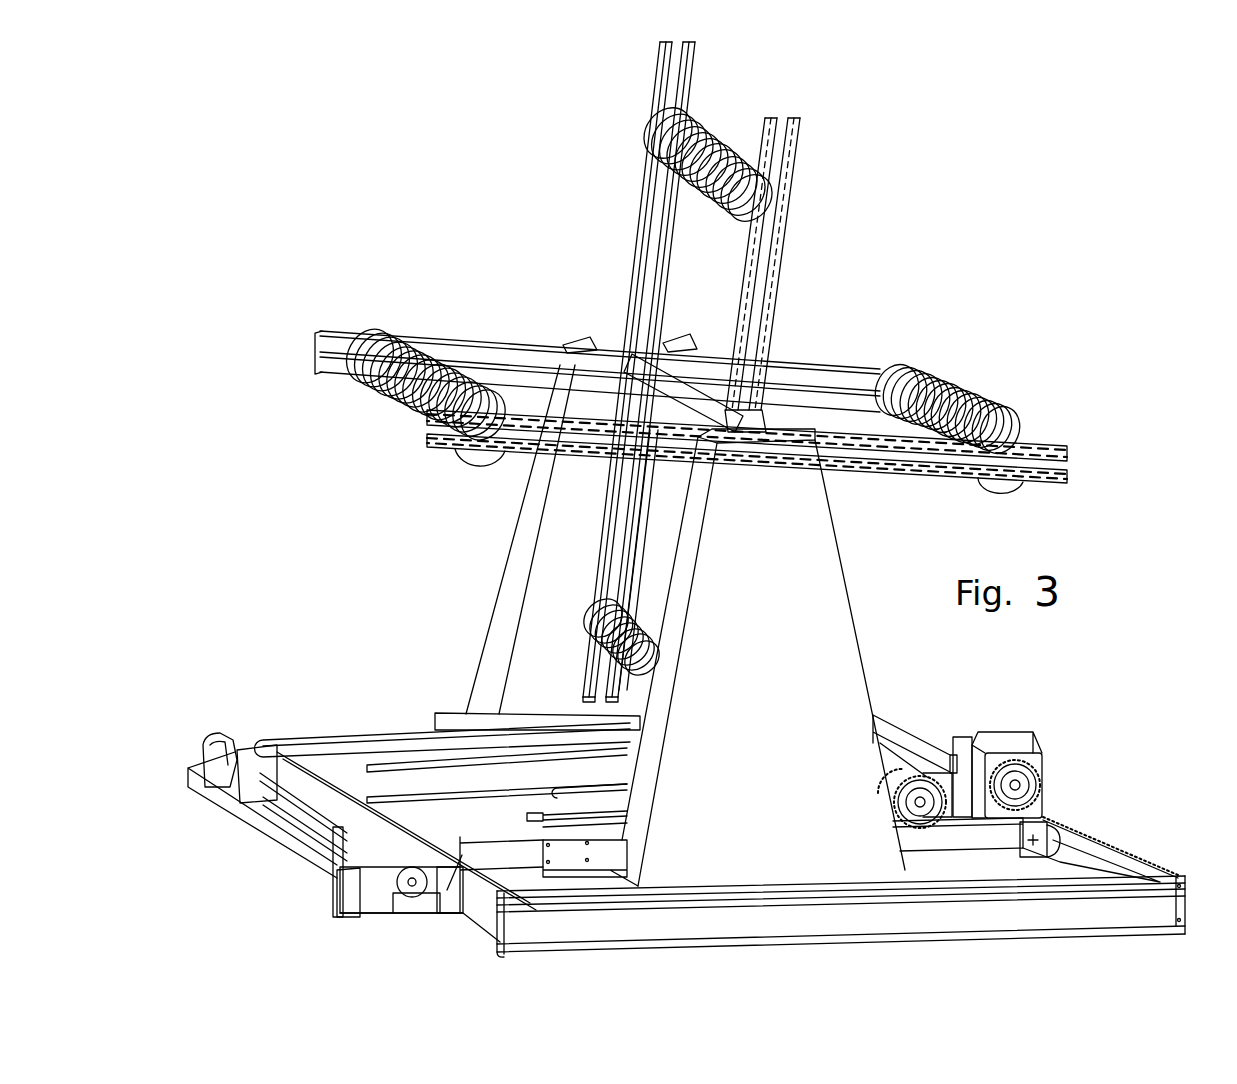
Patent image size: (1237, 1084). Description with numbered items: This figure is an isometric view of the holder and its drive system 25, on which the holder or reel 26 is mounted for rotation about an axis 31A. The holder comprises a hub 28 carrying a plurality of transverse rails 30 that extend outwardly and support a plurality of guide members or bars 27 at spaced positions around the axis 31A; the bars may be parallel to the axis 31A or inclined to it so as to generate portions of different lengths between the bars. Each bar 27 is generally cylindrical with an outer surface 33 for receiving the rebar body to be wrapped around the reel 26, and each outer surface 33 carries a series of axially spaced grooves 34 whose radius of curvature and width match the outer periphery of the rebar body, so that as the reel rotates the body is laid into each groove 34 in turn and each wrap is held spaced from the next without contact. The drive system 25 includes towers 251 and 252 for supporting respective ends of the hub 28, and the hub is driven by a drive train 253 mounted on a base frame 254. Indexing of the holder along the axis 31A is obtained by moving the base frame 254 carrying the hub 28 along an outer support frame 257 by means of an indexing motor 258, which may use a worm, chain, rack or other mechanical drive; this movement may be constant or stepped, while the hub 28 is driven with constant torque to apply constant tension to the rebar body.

The drive system 25 is at (1042, 693).
The reel 26 is at (810, 296).
The bars 27 is at (383, 332).
The hub 28 is at (640, 360).
The transverse rails 30 is at (642, 213).
The axis 31A is at (752, 461).
The outer surface 33 is at (952, 396).
The grooves 34 is at (995, 412).
The tower 251 is at (507, 555).
The tower 252 is at (827, 543).
The drive train 253 is at (920, 775).
The base frame 254 is at (998, 830).
The outer support frame 257 is at (1085, 810).
The indexing motor 258 is at (997, 740).